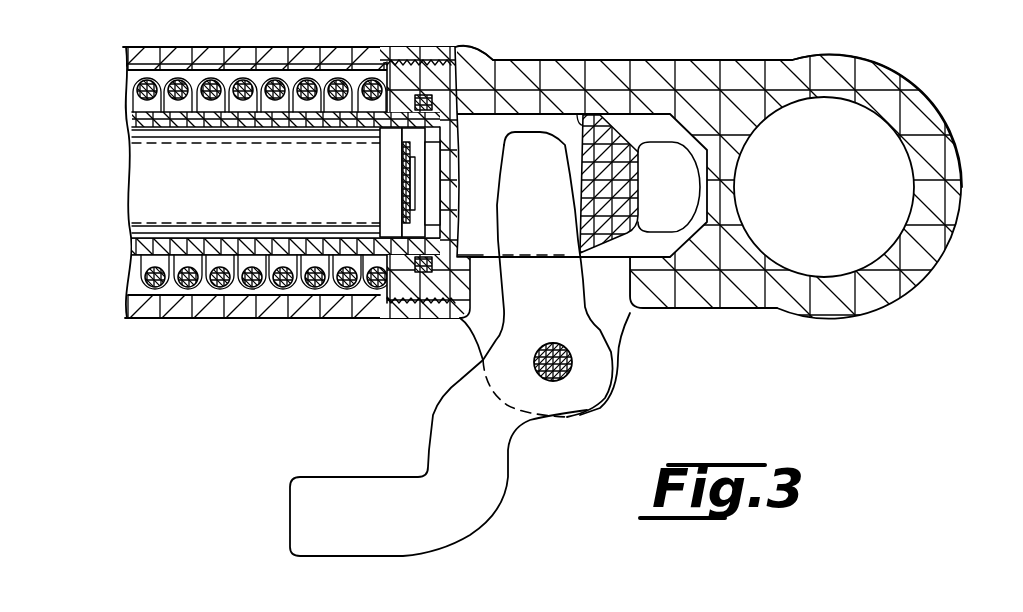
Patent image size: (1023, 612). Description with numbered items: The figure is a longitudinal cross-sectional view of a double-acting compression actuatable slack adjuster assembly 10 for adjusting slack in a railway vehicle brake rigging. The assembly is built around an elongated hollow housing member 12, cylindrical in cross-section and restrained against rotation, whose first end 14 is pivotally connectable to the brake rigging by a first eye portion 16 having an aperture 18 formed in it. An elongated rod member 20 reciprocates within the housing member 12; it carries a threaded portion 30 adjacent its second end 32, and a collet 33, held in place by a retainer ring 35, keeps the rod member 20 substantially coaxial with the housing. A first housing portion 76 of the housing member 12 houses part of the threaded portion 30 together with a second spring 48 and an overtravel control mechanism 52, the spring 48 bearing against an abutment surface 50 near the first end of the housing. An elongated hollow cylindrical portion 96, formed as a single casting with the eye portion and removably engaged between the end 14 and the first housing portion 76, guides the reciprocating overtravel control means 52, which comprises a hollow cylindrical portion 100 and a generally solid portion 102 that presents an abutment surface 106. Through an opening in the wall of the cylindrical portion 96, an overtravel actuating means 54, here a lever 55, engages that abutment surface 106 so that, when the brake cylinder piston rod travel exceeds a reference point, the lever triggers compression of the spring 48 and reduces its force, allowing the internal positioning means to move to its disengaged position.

The double-acting compression actuatable slack adjuster assembly 10 is at (471, 37).
The elongated hollow housing member 12 is at (303, 44).
The first end of housing member 14 is at (950, 253).
The first eye portion 16 is at (943, 155).
The aperture 18 is at (836, 178).
The elongated rod member 20 is at (125, 159).
The threaded portion 30 is at (150, 137).
The second end of rod member 32 is at (157, 203).
The collet 33 is at (388, 157).
The retainer ring 35 is at (403, 220).
The second spring 48 is at (178, 88).
The abutment surface 50 is at (376, 64).
The overtravel control mechanism 52 is at (440, 109).
The overtravel actuating means 54 is at (625, 367).
The lever 55 is at (467, 500).
The first housing portion 76 is at (240, 57).
The elongated hollow cylindrical portion 96 is at (629, 70).
The overtravel control cylindrical portion 100 is at (150, 118).
The generally solid portion 102 is at (617, 200).
The abutment surface 106 is at (577, 115).